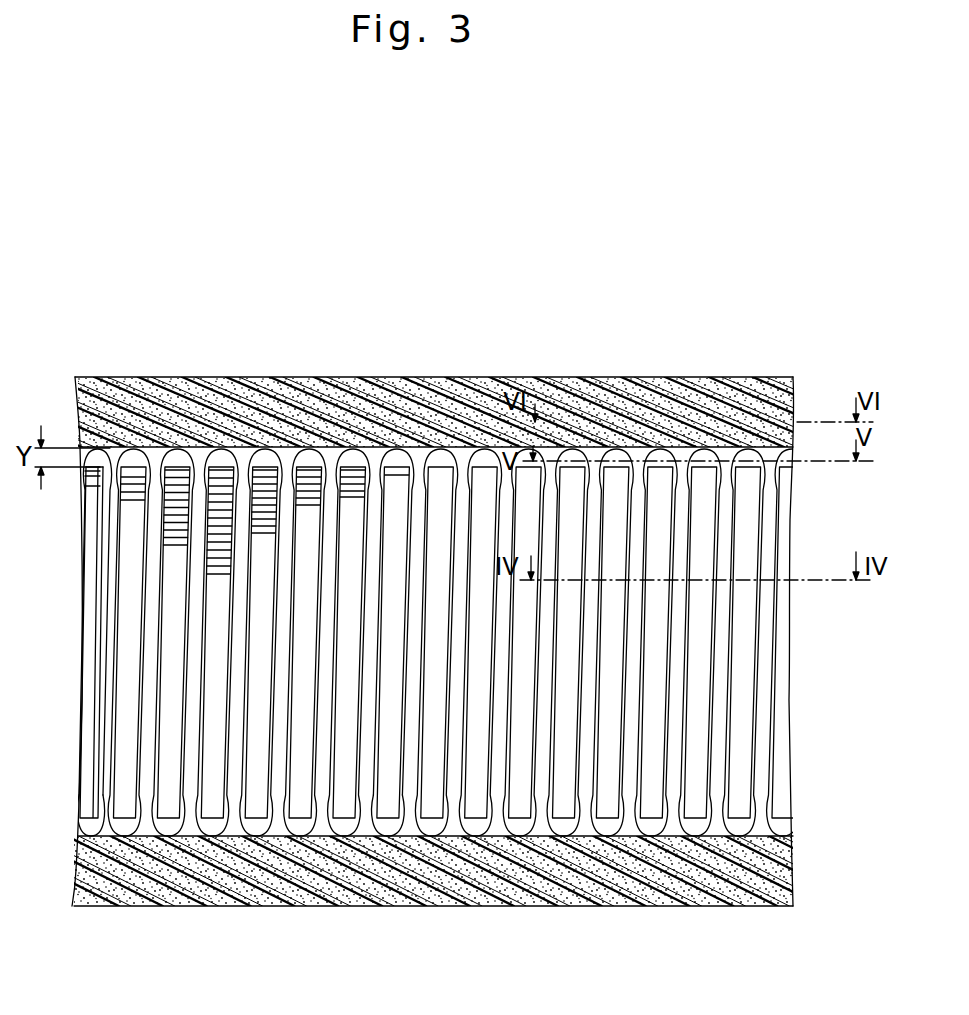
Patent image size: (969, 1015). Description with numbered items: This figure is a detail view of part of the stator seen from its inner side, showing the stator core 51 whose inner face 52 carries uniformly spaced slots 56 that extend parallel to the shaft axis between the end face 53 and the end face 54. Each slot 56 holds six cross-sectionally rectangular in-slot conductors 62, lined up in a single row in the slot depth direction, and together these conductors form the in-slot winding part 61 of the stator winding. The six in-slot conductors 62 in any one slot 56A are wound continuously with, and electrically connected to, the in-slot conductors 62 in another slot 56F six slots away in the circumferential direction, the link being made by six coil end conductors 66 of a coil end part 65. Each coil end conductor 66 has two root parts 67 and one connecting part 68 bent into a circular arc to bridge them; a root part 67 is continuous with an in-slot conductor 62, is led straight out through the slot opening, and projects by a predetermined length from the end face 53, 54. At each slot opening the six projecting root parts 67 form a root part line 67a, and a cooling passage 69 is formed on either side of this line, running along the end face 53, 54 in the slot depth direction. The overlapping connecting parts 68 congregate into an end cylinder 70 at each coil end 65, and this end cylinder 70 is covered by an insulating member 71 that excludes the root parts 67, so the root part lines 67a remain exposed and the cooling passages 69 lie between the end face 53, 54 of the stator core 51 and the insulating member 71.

The stator core 51 is at (130, 748).
The inner face 52 is at (175, 710).
The end face 53 is at (403, 446).
The end face 54 is at (388, 830).
The slot 56 is at (100, 668).
The slot 56A is at (778, 745).
The slot 56F is at (547, 753).
The in-slot winding part 61 is at (768, 641).
The in-slot conductor 62 is at (767, 690).
The coil end part 65 is at (646, 377).
The coil end conductor 66 is at (513, 377).
The root part 67 is at (110, 463).
The root part line 67a is at (95, 818).
The connecting part 68 is at (80, 378).
The cooling passage 69 is at (137, 453).
The end cylinder 70 is at (300, 377).
The insulating member 71 is at (182, 377).